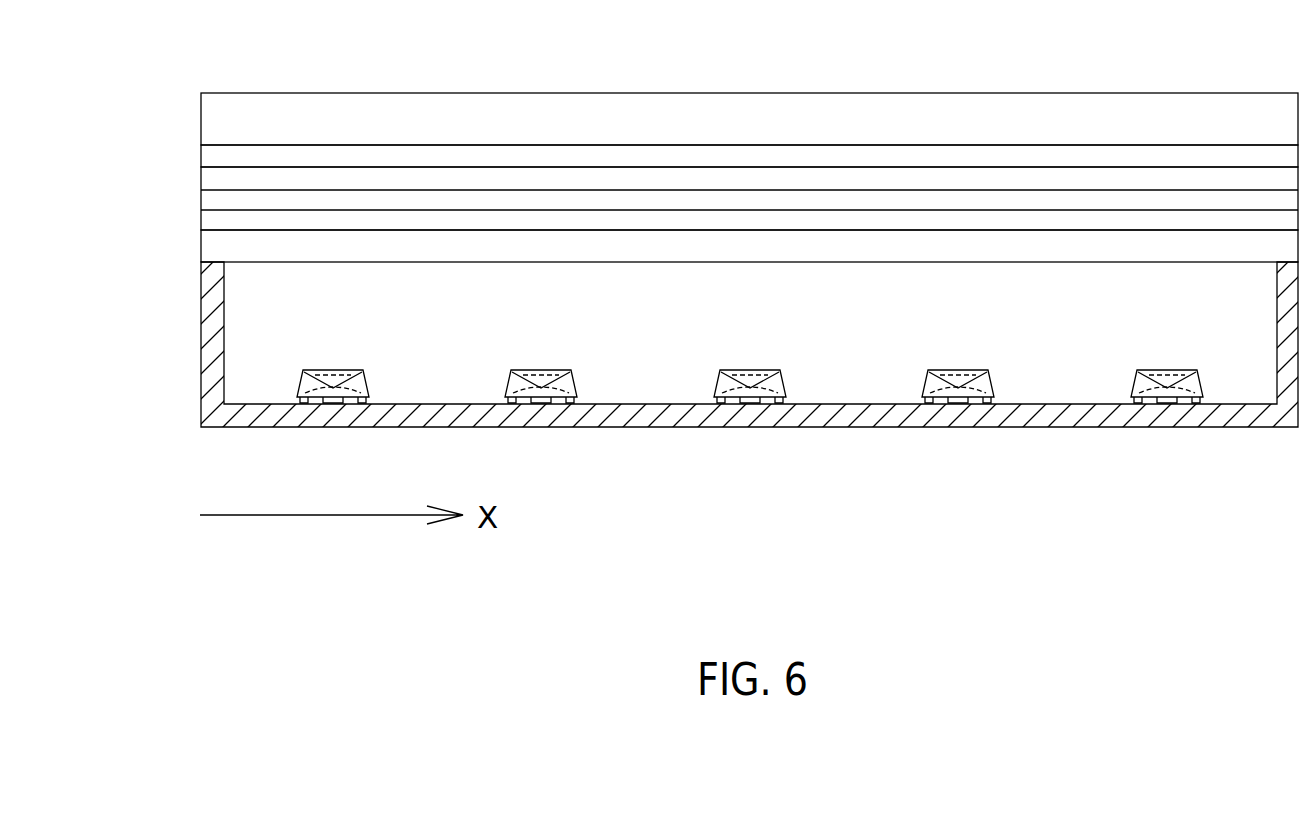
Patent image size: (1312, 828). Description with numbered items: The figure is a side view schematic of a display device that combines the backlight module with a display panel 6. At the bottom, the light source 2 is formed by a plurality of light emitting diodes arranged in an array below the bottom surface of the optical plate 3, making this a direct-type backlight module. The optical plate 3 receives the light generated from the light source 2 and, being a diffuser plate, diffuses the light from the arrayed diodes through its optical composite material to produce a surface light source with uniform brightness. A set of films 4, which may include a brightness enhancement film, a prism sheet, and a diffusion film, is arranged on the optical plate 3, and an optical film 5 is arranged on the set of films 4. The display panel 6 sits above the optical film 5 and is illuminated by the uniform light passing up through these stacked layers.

The light source 2 is at (308, 362).
The optical plate 3 is at (213, 240).
The set of films 4 is at (190, 168).
The optical film 5 is at (212, 160).
The display panel 6 is at (212, 120).